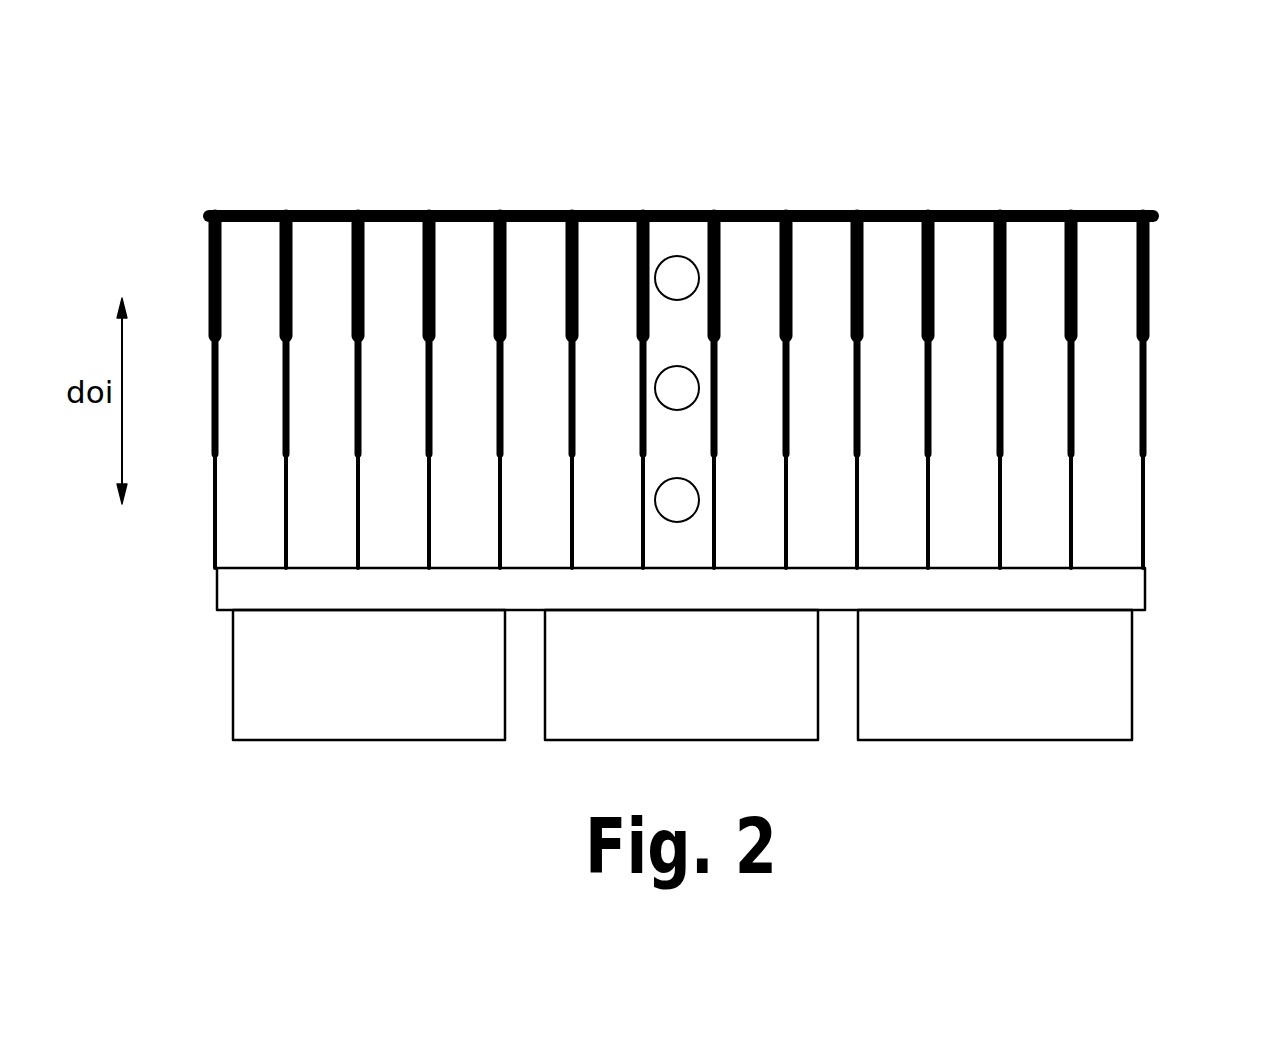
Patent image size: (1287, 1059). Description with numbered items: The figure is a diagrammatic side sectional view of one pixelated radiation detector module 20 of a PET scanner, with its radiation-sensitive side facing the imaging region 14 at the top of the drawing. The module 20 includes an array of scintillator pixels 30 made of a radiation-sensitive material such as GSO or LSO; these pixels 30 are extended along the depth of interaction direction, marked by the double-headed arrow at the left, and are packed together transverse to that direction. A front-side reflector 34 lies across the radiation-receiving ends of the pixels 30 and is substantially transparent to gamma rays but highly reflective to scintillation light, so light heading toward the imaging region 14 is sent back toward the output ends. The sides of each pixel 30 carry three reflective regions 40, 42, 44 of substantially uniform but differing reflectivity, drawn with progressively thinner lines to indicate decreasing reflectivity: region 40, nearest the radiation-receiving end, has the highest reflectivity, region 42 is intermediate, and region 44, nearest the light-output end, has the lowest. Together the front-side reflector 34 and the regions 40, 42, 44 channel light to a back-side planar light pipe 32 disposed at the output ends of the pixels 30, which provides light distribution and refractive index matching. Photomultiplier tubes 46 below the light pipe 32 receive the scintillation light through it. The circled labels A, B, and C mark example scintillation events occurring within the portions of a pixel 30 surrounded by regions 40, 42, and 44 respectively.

The imaging region 14 is at (672, 73).
The pixelated radiation detector module 20 is at (1250, 133).
The scintillator pixel 30 is at (390, 270).
The front-side reflector 34 is at (458, 211).
The reflective region 40 is at (720, 273).
The reflective region 42 is at (860, 390).
The reflective region 44 is at (860, 500).
The back-side planar light pipe 32 is at (1133, 585).
The photomultiplier tubes 46 is at (473, 722).